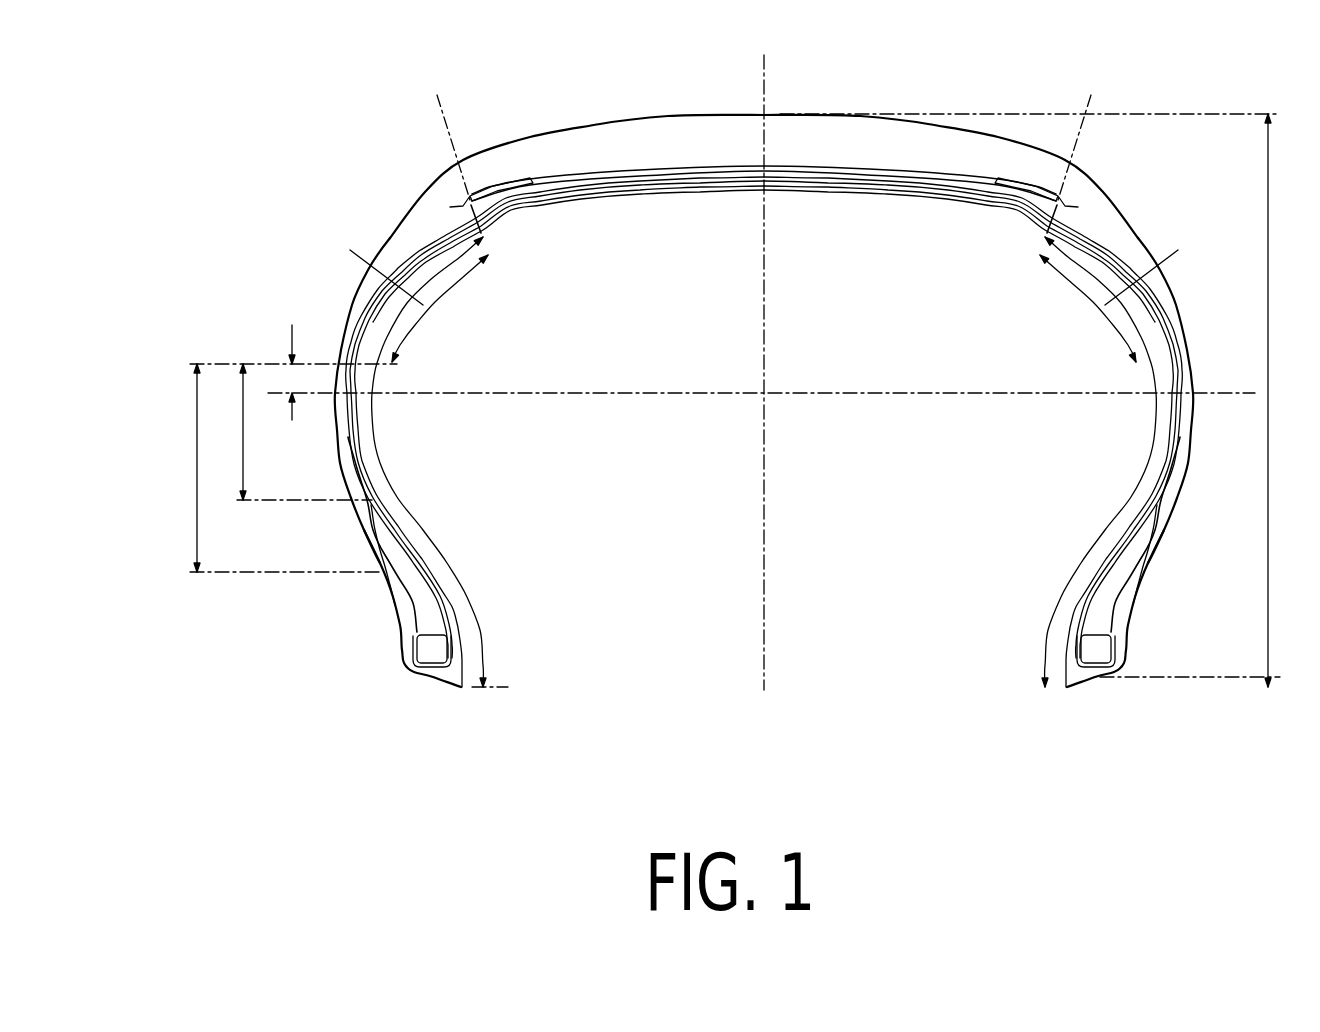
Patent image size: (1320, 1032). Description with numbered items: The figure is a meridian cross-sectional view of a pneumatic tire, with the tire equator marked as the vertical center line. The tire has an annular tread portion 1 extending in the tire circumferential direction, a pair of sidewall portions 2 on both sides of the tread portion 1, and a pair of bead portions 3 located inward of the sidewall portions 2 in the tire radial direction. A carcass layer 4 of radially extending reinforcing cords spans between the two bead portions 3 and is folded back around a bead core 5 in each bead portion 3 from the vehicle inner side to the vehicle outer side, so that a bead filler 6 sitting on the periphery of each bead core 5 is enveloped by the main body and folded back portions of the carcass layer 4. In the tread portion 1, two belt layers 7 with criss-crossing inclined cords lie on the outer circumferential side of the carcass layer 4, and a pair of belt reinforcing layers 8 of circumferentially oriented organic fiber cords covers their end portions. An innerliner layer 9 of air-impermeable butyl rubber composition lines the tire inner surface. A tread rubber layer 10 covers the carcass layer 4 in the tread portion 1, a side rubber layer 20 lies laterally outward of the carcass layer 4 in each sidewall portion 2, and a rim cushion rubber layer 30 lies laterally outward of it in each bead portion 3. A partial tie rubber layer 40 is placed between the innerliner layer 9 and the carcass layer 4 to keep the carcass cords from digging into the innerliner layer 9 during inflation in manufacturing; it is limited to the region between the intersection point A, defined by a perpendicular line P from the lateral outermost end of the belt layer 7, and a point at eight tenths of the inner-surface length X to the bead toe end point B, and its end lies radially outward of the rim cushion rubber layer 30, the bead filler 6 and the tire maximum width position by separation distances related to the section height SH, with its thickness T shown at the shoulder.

The tread portion 1 is at (764, 394).
The tread rubber layer 10 is at (862, 118).
The sidewall portions 2 is at (324, 432).
The bead portions 3 is at (765, 614).
The side rubber layer 20 is at (347, 478).
The rim cushion rubber layer 30 is at (405, 642).
The carcass layer 4 is at (790, 180).
The bead core 5 is at (432, 648).
The bead filler 6 is at (427, 600).
The belt layers 7 is at (826, 174).
The belt reinforcing layer 8 is at (520, 186).
The innerliner layer 9 is at (895, 194).
The partial tie rubber layer 40 is at (372, 312).